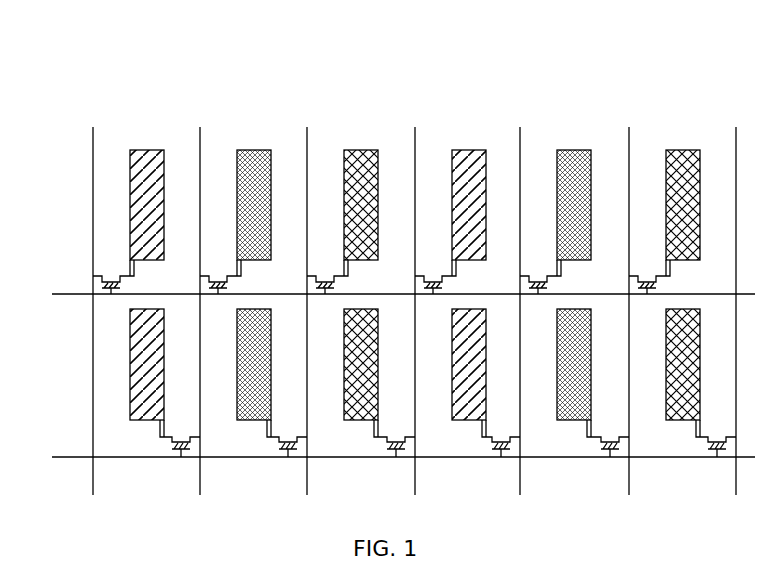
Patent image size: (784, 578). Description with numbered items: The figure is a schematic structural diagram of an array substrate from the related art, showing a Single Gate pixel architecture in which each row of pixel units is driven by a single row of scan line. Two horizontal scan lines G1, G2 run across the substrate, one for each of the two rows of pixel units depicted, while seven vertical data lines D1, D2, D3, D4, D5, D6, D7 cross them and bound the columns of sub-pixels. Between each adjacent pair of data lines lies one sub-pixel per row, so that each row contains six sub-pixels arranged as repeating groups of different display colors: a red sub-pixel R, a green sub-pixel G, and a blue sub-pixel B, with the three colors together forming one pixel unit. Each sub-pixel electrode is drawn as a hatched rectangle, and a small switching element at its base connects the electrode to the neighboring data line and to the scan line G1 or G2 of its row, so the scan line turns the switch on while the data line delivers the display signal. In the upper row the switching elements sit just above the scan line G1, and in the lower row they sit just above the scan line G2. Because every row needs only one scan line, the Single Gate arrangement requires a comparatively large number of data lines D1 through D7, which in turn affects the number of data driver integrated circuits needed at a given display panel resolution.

The red sub-pixel R is at (145, 150).
The green sub-pixel G is at (252, 150).
The blue sub-pixel B is at (360, 150).
The data line D1 is at (94, 296).
The data line D2 is at (201, 296).
The data line D3 is at (308, 296).
The data line D4 is at (416, 296).
The data line D5 is at (521, 296).
The data line D6 is at (630, 296).
The data line D7 is at (737, 296).
The scan line G1 is at (383, 296).
The scan line G2 is at (383, 459).